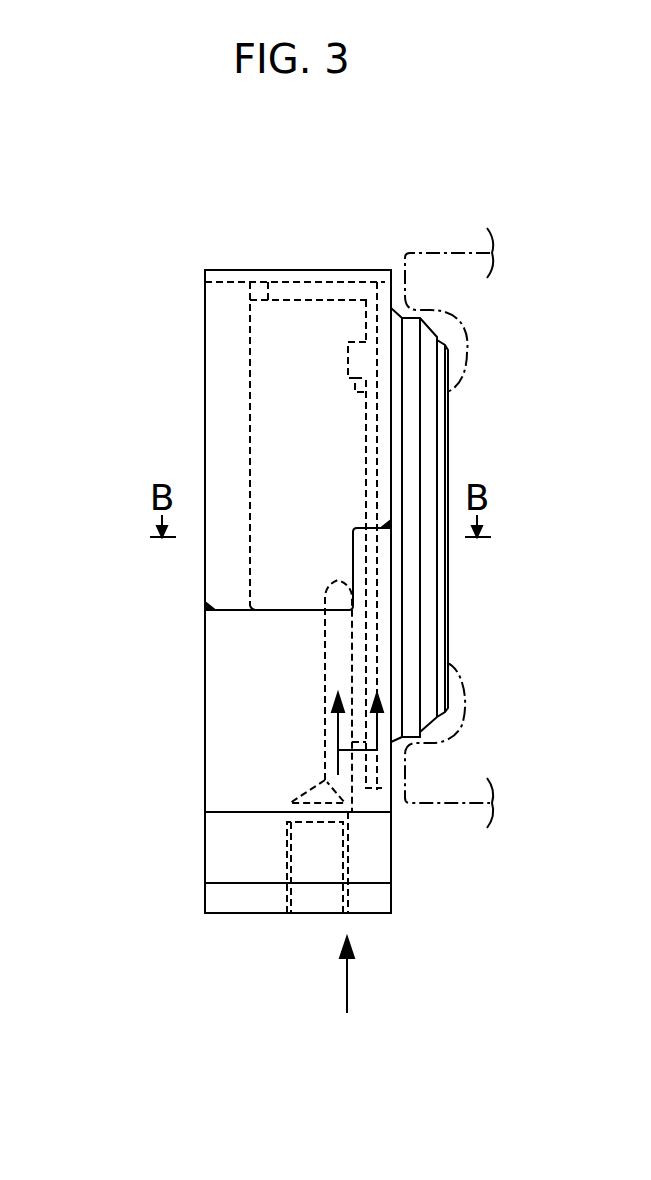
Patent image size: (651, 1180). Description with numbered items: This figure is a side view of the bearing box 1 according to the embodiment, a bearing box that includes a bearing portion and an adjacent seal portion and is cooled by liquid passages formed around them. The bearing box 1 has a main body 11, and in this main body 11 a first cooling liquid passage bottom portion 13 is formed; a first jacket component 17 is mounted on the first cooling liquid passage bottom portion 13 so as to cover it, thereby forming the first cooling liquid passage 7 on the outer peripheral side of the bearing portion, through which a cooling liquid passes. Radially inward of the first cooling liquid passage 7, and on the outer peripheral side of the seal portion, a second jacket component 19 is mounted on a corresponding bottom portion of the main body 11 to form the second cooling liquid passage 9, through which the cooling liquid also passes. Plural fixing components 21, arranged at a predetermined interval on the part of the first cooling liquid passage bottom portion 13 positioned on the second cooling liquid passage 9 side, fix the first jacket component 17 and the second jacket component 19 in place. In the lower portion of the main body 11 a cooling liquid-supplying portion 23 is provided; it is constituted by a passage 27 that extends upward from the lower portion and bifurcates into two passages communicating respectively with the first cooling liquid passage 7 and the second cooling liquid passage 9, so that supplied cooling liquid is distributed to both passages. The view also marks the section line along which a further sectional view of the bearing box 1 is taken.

The bearing box 1 is at (90, 255).
The first cooling liquid passage 7 is at (313, 289).
The second cooling liquid passage 9 is at (378, 297).
The main body 11 is at (205, 771).
The first cooling liquid passage bottom portion 13 is at (254, 282).
The first jacket component 17 is at (222, 358).
The second jacket component 19 is at (392, 737).
The fixing component 21 is at (346, 355).
The cooling liquid-supplying portion 23 is at (353, 913).
The passage 27 is at (328, 748).